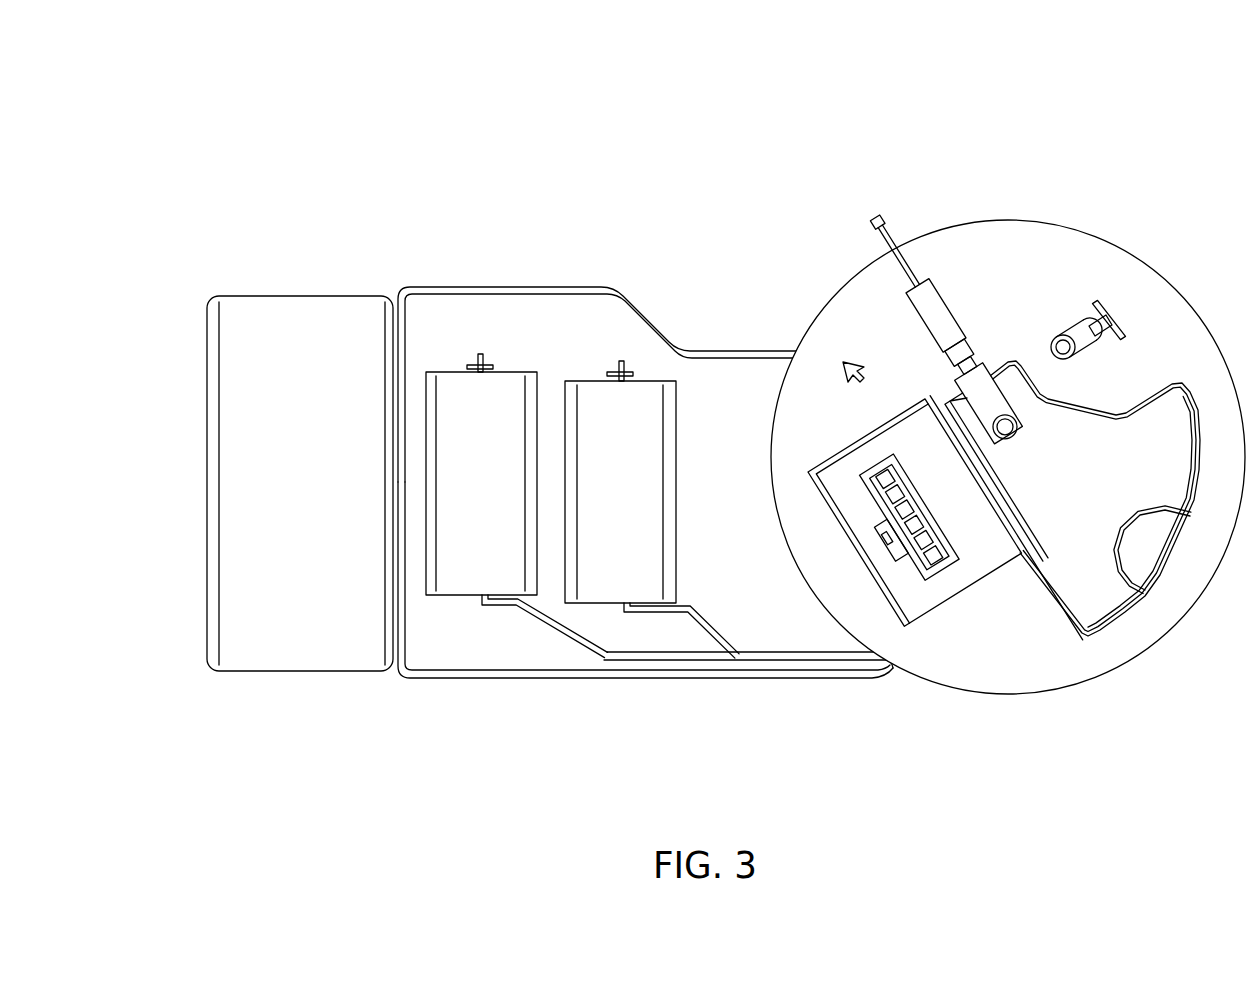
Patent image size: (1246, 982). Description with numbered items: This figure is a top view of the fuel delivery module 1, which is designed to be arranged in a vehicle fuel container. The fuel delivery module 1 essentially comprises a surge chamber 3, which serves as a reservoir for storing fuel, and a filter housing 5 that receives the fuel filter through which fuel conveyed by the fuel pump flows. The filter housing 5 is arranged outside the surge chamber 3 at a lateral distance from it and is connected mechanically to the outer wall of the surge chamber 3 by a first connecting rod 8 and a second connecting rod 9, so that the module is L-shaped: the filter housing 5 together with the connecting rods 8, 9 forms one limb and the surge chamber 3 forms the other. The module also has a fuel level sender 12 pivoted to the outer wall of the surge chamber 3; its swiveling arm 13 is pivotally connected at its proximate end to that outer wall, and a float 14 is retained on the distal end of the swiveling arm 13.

The fuel delivery module 1 is at (216, 117).
The surge chamber 3 is at (1187, 594).
The filter housing 5 is at (232, 413).
The first connecting rod 8 is at (487, 673).
The second connecting rod 9 is at (460, 287).
The fuel level sender 12 is at (703, 714).
The swiveling arm 13 is at (682, 608).
The float 14 is at (511, 389).